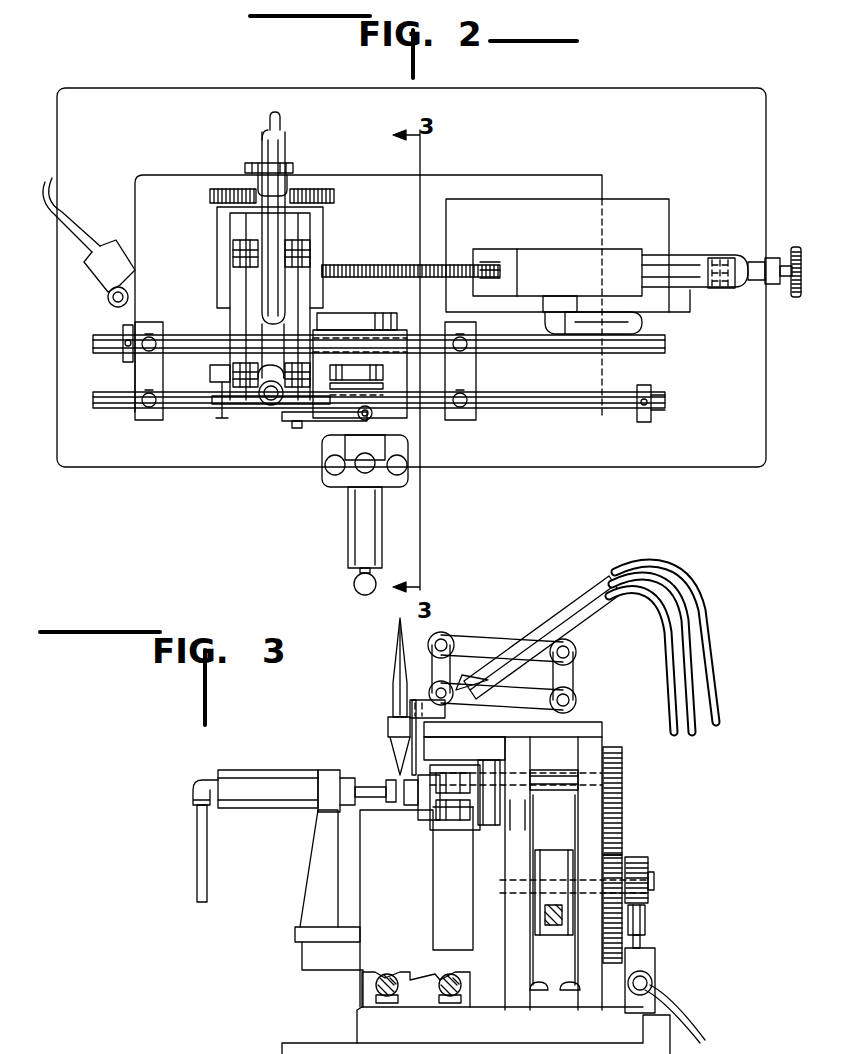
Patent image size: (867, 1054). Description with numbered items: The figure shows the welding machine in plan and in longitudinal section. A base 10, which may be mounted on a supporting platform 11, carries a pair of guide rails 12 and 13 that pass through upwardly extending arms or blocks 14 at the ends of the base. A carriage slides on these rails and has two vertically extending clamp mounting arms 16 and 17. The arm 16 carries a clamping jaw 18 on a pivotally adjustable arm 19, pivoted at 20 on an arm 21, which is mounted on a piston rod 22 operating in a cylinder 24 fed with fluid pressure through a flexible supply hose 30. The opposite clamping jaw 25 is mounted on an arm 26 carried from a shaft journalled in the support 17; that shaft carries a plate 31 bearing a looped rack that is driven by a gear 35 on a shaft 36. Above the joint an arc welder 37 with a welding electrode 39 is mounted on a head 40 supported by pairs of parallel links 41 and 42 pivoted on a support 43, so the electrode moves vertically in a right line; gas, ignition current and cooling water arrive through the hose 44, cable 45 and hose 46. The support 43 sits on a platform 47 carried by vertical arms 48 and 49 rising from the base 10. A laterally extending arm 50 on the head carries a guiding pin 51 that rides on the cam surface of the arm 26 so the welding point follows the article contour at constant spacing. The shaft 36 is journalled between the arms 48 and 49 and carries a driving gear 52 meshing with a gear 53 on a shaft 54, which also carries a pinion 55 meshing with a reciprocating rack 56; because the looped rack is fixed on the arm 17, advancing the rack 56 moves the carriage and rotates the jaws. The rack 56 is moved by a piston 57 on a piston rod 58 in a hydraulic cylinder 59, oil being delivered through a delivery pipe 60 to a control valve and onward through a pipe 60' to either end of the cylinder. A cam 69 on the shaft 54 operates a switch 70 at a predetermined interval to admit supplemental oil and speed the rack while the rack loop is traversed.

In FIG. 2, the base 10 is at (494, 186).
In FIG. 3, the base 10 is at (476, 1034).
In FIG. 2, the supporting platform 11 is at (629, 460).
In FIG. 2, the guide rail 12 is at (580, 403).
In FIG. 3, the guide rail 12 is at (378, 988).
In FIG. 2, the guide rail 13 is at (598, 347).
In FIG. 3, the guide rail 13 is at (443, 993).
In FIG. 2, the upwardly extending arms or blocks 14 is at (145, 372).
In FIG. 3, the upwardly extending arms or blocks 14 is at (400, 1010).
In FIG. 3, the clamp mounting arm 16 is at (329, 908).
In FIG. 3, the clamp mounting arm 17 is at (433, 880).
In FIG. 2, the clamping jaw 18 is at (368, 397).
In FIG. 3, the clamping jaw 18 is at (390, 803).
In FIG. 2, the pivotally adjustable arm 19 is at (273, 406).
In FIG. 2, the pivot 20 is at (373, 413).
In FIG. 2, the arm 21 is at (315, 422).
In FIG. 3, the piston rod 22 is at (360, 800).
In FIG. 2, the cylinder 24 is at (355, 545).
In FIG. 3, the cylinder 24 is at (268, 800).
In FIG. 2, the clamping jaw 25 is at (375, 391).
In FIG. 3, the clamping jaw 25 is at (412, 806).
In FIG. 2, the arm 26 is at (348, 373).
In FIG. 3, the arm 26 is at (428, 822).
In FIG. 2, the flexible supply hose 30 is at (362, 596).
In FIG. 3, the flexible supply hose 30 is at (199, 868).
In FIG. 2, the plate 31 is at (362, 325).
In FIG. 3, the plate 31 is at (492, 802).
In FIG. 3, the gear 35 is at (488, 800).
In FIG. 3, the shaft 36 is at (552, 780).
In FIG. 2, the arc welder 37 is at (270, 406).
In FIG. 3, the arc welder 37 is at (388, 742).
In FIG. 3, the welding electrode 39 is at (397, 778).
In FIG. 2, the head 40 is at (256, 388).
In FIG. 3, the head 40 is at (430, 656).
In FIG. 2, the parallel link 41 is at (306, 285).
In FIG. 3, the parallel link 41 is at (505, 640).
In FIG. 3, the parallel link 42 is at (505, 700).
In FIG. 2, the support 43 is at (295, 238).
In FIG. 3, the support 43 is at (575, 676).
In FIG. 2, the hose 44 is at (277, 138).
In FIG. 3, the hose 44 is at (692, 734).
In FIG. 2, the cable 45 is at (263, 142).
In FIG. 3, the cable 45 is at (672, 732).
In FIG. 2, the hose 46 is at (279, 113).
In FIG. 3, the hose 46 is at (720, 722).
In FIG. 2, the platform 47 is at (238, 222).
In FIG. 3, the platform 47 is at (592, 722).
In FIG. 3, the vertical arm 48 is at (513, 830).
In FIG. 3, the vertical arm 49 is at (585, 822).
In FIG. 3, the laterally extending arm 50 is at (437, 690).
In FIG. 3, the guiding pin 51 is at (412, 758).
In FIG. 2, the driving gear 52 is at (293, 189).
In FIG. 3, the driving gear 52 is at (623, 750).
In FIG. 2, the gear 53 is at (325, 189).
In FIG. 3, the gear 53 is at (623, 837).
In FIG. 3, the shaft 54 is at (655, 881).
In FIG. 3, the pinion 55 is at (558, 856).
In FIG. 2, the reciprocating rack 56 is at (383, 266).
In FIG. 3, the reciprocating rack 56 is at (562, 912).
In FIG. 2, the piston 57 is at (727, 290).
In FIG. 2, the piston rod 58 is at (500, 266).
In FIG. 2, the hydraulic cylinder 59 is at (693, 300).
In FIG. 2, the delivery pipe 60 is at (600, 337).
In FIG. 2, the pipe 60' is at (695, 250).
In FIG. 2, the cam 69 is at (248, 165).
In FIG. 3, the cam 69 is at (649, 868).
In FIG. 3, the switch 70 is at (656, 965).